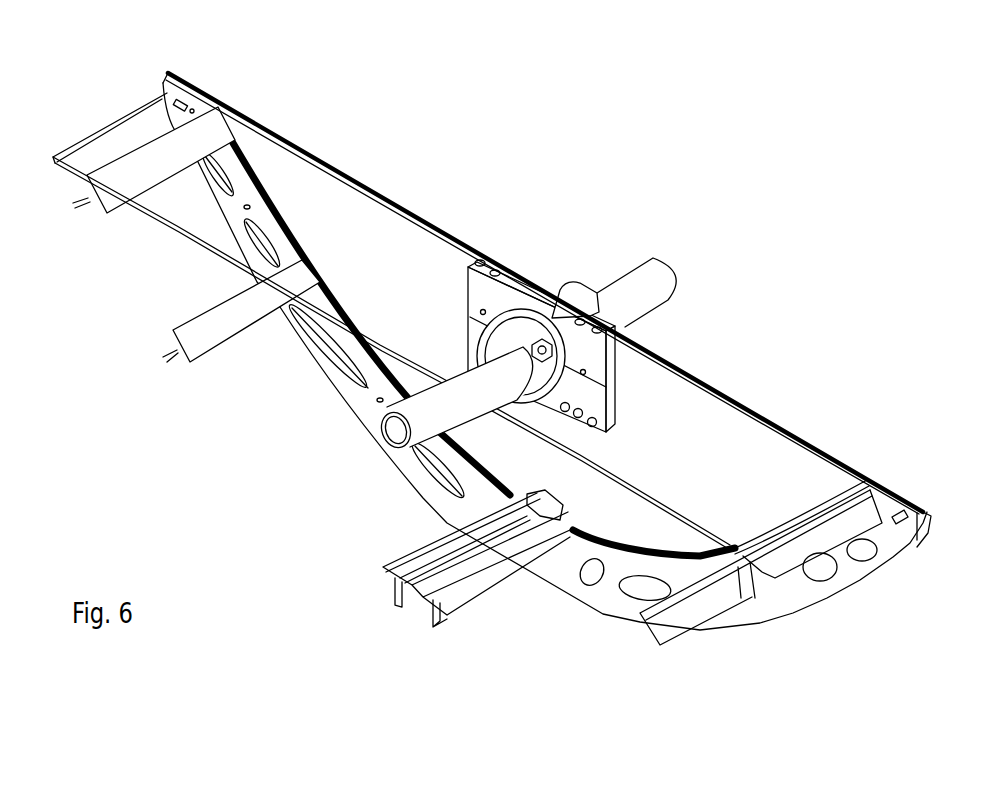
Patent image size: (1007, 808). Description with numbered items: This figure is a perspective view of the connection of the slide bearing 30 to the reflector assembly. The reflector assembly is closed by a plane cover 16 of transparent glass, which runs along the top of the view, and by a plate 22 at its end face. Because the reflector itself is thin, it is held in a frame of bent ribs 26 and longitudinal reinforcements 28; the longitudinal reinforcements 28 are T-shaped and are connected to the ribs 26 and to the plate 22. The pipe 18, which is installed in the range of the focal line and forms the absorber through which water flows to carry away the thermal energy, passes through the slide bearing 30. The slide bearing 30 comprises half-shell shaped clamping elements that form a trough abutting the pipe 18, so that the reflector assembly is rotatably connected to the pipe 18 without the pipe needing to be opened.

The plane cover 16 is at (342, 208).
The pipe 18 is at (638, 277).
The plate 22 is at (588, 498).
The bent ribs 26 is at (310, 347).
The longitudinal reinforcements 28 is at (442, 620).
The slide bearing 30 is at (522, 322).